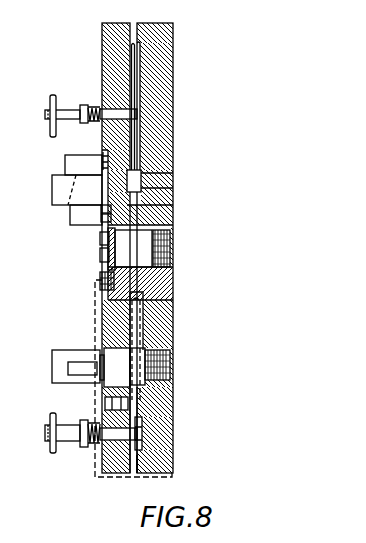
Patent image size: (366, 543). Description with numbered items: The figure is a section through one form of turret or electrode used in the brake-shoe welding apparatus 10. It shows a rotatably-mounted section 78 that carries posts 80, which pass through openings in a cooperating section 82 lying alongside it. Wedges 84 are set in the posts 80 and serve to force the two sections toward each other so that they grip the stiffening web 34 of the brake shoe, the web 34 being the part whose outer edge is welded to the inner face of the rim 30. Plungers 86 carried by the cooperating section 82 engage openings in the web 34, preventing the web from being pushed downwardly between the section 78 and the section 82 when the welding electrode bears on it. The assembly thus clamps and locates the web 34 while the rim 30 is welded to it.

The apparatus 10 is at (0, 530).
The rim 30 is at (106, 480).
The stiffening web 34 is at (137, 461).
The rotatably-mounted section 78 is at (152, 141).
The posts 80 is at (63, 189).
The cooperating section 82 is at (112, 50).
The wedges 84 is at (77, 167).
The plungers 86 is at (60, 114).